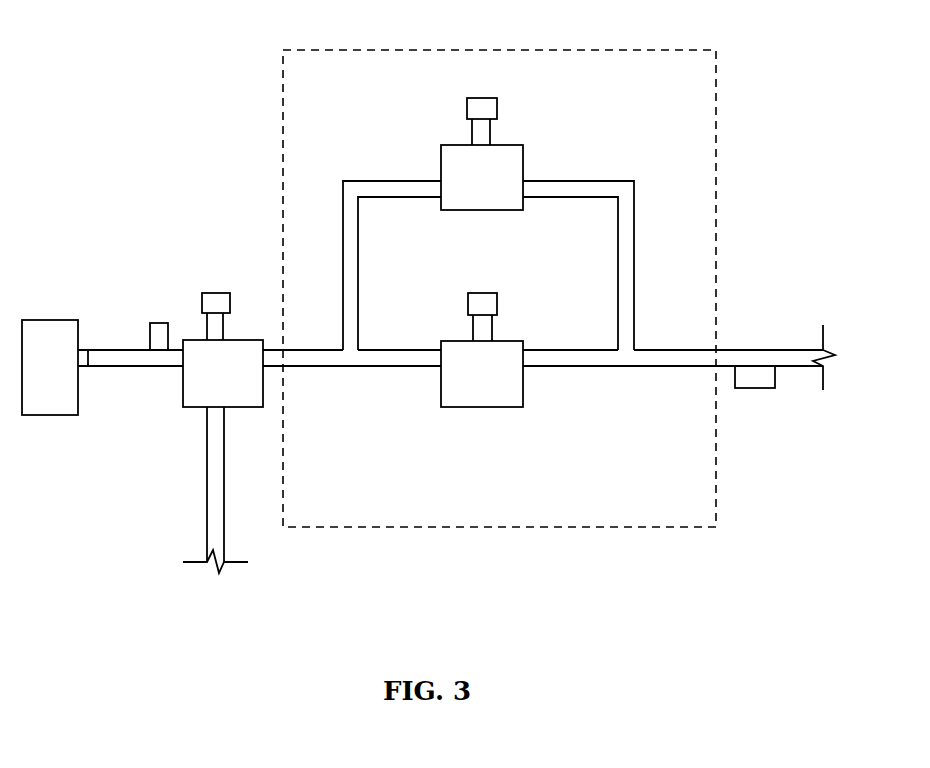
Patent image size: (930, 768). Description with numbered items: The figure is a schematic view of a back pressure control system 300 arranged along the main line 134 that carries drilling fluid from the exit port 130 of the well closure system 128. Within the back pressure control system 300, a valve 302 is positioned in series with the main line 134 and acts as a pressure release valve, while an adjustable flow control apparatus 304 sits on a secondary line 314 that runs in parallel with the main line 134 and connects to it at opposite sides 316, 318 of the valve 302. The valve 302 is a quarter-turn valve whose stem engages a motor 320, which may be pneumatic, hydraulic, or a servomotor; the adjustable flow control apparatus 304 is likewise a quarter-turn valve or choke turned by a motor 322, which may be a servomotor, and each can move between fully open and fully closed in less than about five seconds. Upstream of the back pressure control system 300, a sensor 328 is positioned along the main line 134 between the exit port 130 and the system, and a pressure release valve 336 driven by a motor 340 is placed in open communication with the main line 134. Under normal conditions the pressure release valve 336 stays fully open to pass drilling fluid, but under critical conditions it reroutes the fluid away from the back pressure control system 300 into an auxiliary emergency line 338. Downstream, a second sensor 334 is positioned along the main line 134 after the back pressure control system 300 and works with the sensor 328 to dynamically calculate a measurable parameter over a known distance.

The back pressure control system 300 is at (688, 50).
The well closure system 128 is at (44, 320).
The exit port 130 is at (86, 348).
The main line 134 is at (110, 367).
The sensor 328 is at (160, 322).
The motor 340 is at (220, 293).
The pressure release valve 336 is at (190, 408).
The auxiliary line 338 is at (225, 543).
The secondary line 314 is at (372, 180).
The adjustable flow control apparatus 304 is at (503, 212).
The motor 322 is at (497, 105).
The valve 302 is at (497, 409).
The motor 320 is at (497, 300).
The first side 316 is at (420, 348).
The second side 318 is at (566, 348).
The second sensor 334 is at (758, 389).